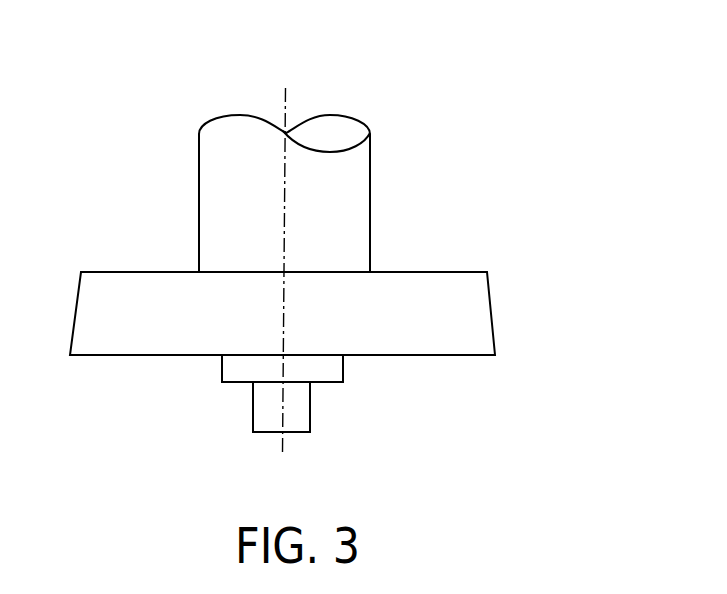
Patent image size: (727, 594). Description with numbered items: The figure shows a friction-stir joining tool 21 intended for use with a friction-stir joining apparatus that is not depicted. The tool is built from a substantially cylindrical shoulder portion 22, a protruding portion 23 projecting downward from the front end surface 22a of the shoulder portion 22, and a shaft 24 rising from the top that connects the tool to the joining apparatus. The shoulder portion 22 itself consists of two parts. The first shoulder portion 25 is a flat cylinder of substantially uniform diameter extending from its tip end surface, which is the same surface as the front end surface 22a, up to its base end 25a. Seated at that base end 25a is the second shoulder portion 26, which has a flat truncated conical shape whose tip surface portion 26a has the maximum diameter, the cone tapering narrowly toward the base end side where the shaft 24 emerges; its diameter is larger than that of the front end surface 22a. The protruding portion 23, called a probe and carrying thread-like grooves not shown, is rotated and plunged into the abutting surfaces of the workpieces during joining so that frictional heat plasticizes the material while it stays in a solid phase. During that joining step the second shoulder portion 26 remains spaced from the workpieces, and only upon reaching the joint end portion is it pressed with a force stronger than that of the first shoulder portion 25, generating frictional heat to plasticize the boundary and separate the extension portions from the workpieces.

The joining tool 21 is at (383, 90).
The shoulder portion 22 is at (325, 370).
The front end surface 22a is at (237, 383).
The protruding portion 23 is at (310, 405).
The shaft 24 is at (370, 203).
The first shoulder portion 25 is at (343, 375).
The base end 25a is at (217, 357).
The second shoulder portion 26 is at (496, 342).
The tip surface portion 26a is at (82, 357).